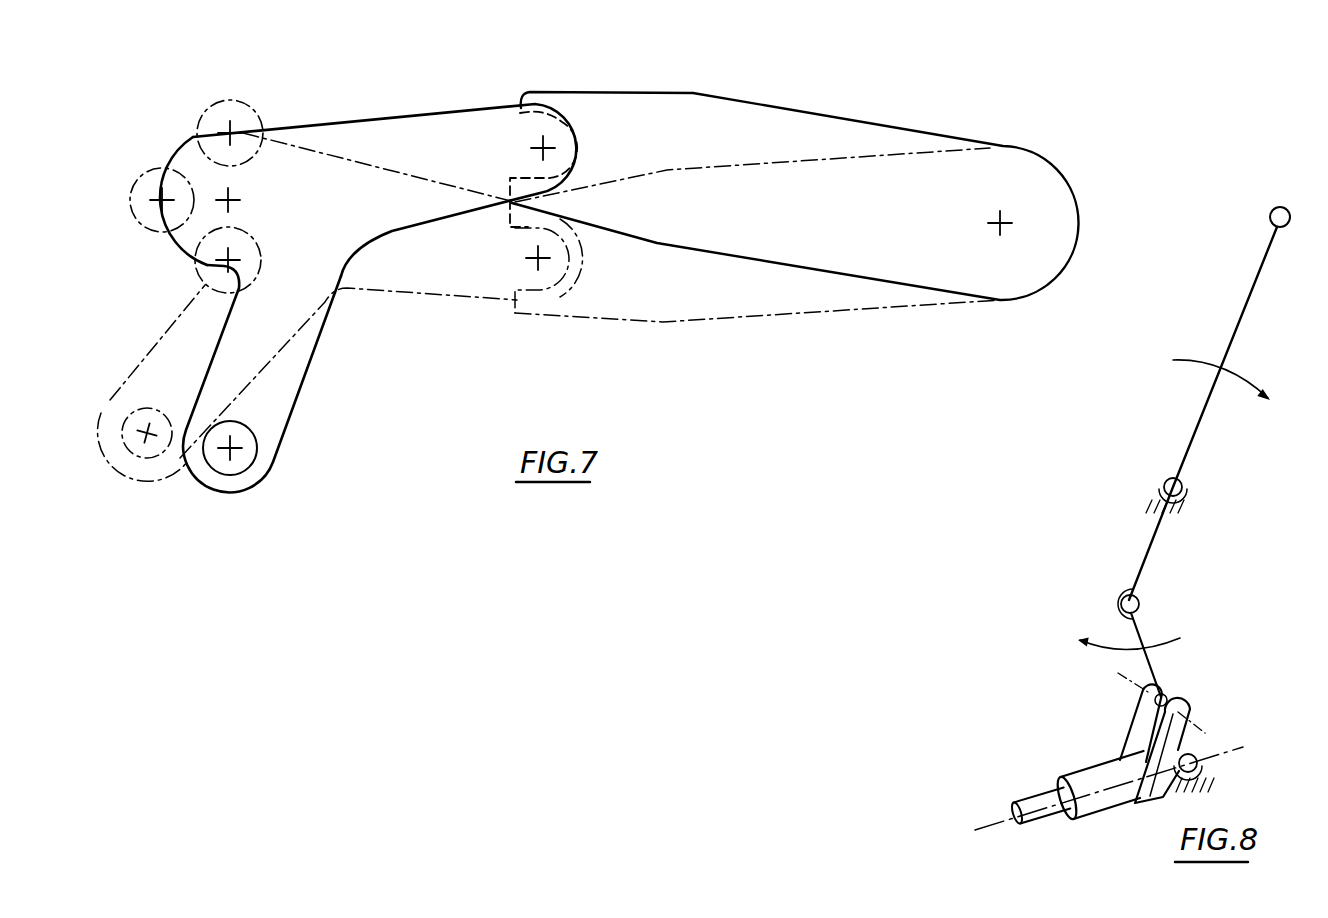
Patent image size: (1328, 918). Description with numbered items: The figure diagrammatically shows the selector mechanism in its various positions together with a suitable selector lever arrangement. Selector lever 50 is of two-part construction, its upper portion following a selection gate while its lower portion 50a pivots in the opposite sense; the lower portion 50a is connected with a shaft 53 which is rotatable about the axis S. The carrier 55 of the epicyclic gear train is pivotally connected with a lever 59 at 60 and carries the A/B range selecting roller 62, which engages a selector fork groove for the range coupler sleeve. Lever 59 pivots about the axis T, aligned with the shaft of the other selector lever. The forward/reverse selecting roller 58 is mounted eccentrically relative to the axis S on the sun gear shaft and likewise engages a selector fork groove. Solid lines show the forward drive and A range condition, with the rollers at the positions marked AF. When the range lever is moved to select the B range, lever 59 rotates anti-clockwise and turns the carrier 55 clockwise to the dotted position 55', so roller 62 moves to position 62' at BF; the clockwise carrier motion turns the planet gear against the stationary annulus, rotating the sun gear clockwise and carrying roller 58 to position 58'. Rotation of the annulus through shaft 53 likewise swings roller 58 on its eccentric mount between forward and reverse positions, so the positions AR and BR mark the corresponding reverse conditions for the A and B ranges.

In FIG. 7, the carrier 55 is at (368, 161).
In FIG. 7, the dotted line position of carrier 55' is at (381, 295).
In FIG. 7, the pivotal connection 60 is at (533, 143).
In FIG. 7, the lever 59 is at (680, 120).
In FIG. 7, the A/B range selecting roller 62 is at (262, 394).
In FIG. 7, the displaced position of A/B range selecting roller 62' is at (151, 404).
In FIG. 7, the forward/reverse selecting roller 58 is at (178, 260).
In FIG. 7, the displaced position of forward/reverse selecting roller 58' is at (139, 133).
In FIG. 7, the axis of rotation S is at (225, 194).
In FIG. 8, the axis of rotation S is at (1003, 823).
In FIG. 7, the pivot axis T is at (1000, 230).
In FIG. 7, the B range reverse position BR is at (250, 107).
In FIG. 7, the B range forward position BF is at (130, 388).
In FIG. 7, the A range reverse position AR is at (126, 188).
In FIG. 7, the A range forward position AF is at (267, 247).
In FIG. 8, the selector lever 50 is at (1247, 303).
In FIG. 8, the lower portion of selector lever 50a is at (1137, 623).
In FIG. 8, the shaft 53 is at (1028, 805).